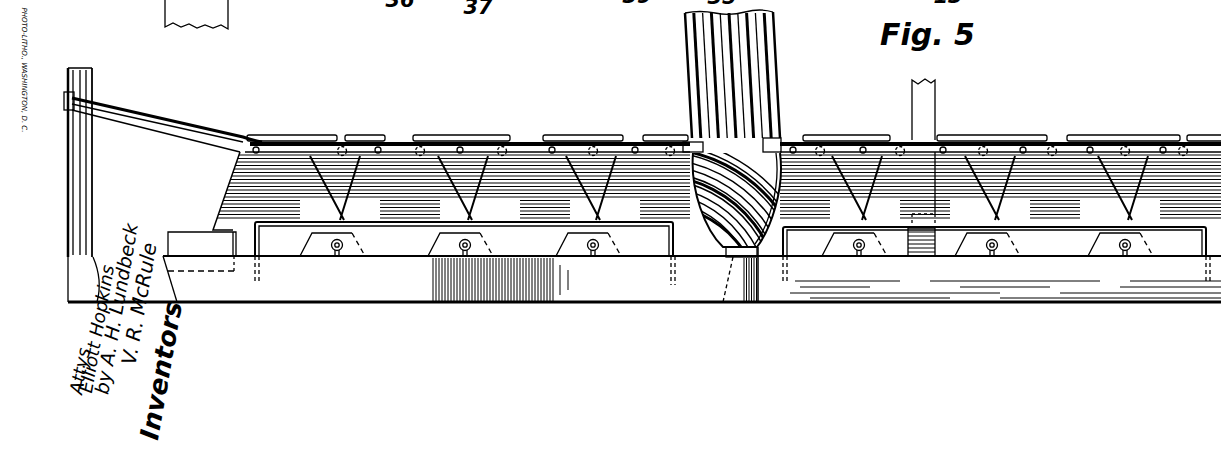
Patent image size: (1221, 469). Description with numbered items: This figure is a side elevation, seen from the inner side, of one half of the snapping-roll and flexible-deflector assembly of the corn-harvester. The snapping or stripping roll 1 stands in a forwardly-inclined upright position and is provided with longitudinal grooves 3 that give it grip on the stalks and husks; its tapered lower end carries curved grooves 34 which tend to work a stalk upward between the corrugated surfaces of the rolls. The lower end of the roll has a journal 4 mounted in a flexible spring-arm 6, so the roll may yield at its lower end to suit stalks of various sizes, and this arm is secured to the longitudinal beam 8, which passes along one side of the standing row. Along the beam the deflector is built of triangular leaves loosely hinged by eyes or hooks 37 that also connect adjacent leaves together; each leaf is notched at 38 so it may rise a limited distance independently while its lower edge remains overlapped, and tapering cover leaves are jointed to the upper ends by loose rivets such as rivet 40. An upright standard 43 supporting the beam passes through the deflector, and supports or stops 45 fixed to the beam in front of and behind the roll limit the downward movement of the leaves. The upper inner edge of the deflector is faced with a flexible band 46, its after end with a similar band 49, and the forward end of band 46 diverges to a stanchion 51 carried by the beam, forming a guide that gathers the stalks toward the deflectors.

The snapping or stripping roll 1 is at (783, 80).
The longitudinal grooves 3 is at (720, 72).
The journal 4 is at (737, 290).
The spring-arm 6 is at (698, 288).
The longitudinal beam 8 is at (1005, 282).
The right and left threads or curved grooves 34 is at (692, 150).
The eyes or hooks 37 is at (992, 257).
The notch 38 is at (353, 232).
The loose rivet 40 is at (294, 157).
The upright frame member or standard 43 is at (917, 100).
The supports or stops 45 is at (643, 226).
The strap or band 46 is at (173, 127).
The band 49 is at (1003, 152).
The stanchion 51 is at (87, 127).